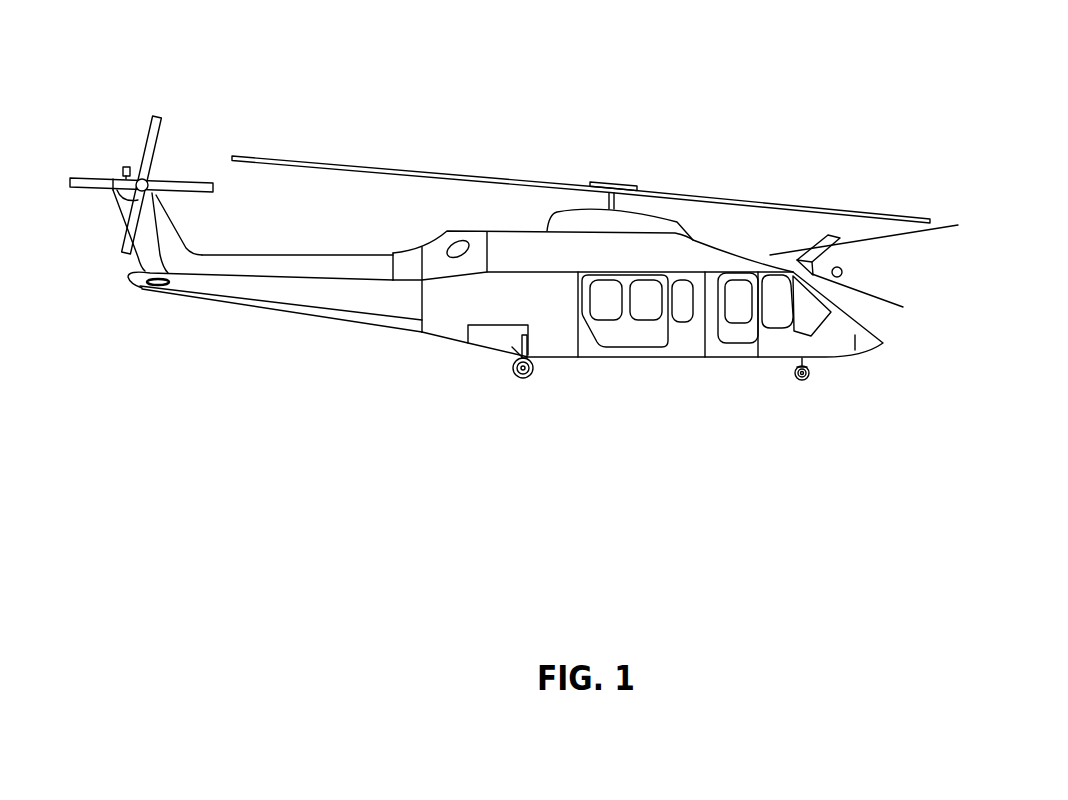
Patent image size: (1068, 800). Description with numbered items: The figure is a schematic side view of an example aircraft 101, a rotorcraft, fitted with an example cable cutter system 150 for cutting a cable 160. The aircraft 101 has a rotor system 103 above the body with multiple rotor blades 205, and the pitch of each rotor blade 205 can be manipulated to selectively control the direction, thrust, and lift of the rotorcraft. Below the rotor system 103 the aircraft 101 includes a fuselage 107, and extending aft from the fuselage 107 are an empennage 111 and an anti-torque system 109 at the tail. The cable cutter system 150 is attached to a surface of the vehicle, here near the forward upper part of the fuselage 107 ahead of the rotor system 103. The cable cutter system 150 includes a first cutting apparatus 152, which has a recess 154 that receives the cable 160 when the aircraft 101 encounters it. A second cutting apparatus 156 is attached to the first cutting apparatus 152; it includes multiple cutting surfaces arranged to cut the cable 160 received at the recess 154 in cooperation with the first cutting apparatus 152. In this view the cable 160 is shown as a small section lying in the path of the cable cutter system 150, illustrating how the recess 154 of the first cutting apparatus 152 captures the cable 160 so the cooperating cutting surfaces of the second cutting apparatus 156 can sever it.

The aircraft 101 is at (720, 95).
The rotor system 103 is at (583, 170).
The rotor blade 205 is at (370, 165).
The fuselage 107 is at (690, 358).
The anti-torque system 109 is at (120, 162).
The empennage 111 is at (288, 315).
The cable cutter system 150 is at (843, 232).
The first cutting apparatus 152 is at (958, 225).
The recess 154 is at (806, 270).
The second cutting apparatus 156 is at (903, 307).
The cable 160 is at (842, 272).